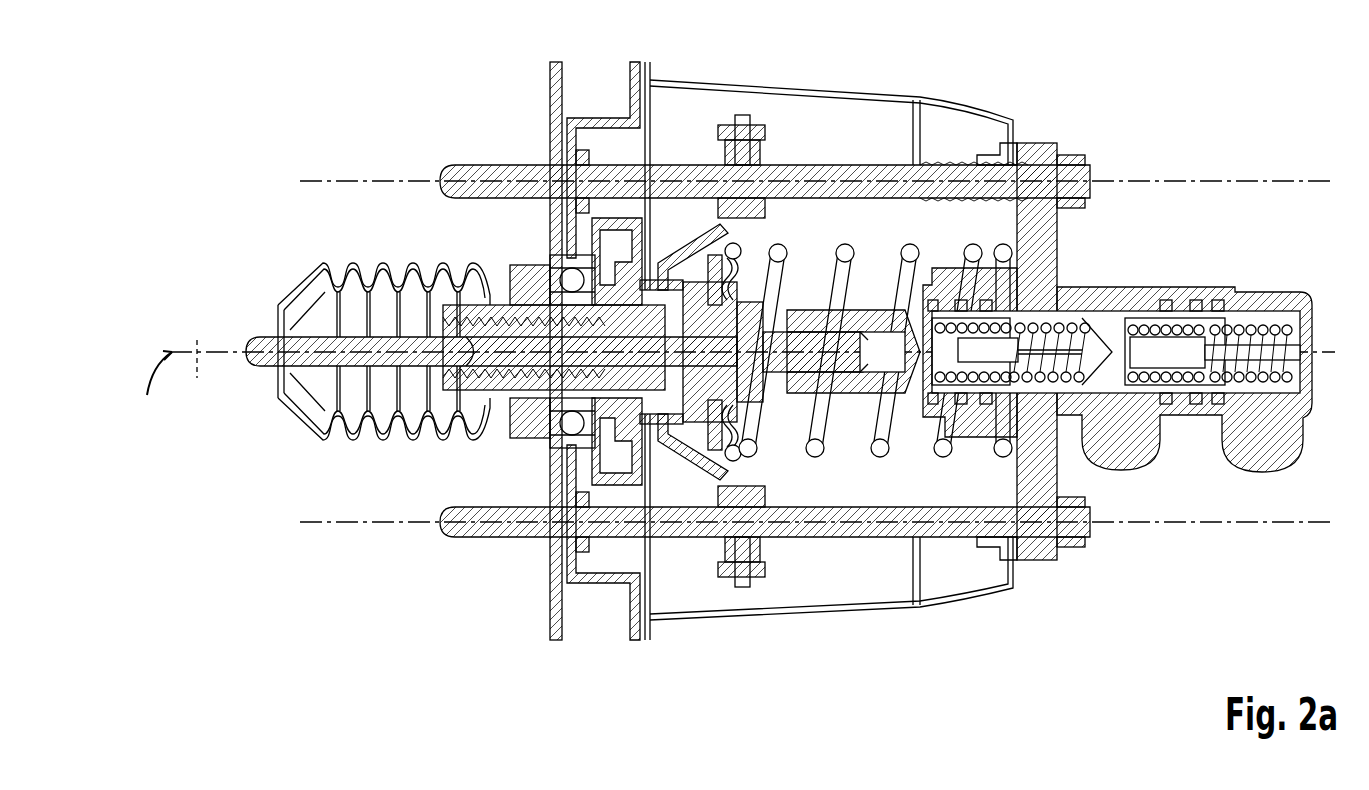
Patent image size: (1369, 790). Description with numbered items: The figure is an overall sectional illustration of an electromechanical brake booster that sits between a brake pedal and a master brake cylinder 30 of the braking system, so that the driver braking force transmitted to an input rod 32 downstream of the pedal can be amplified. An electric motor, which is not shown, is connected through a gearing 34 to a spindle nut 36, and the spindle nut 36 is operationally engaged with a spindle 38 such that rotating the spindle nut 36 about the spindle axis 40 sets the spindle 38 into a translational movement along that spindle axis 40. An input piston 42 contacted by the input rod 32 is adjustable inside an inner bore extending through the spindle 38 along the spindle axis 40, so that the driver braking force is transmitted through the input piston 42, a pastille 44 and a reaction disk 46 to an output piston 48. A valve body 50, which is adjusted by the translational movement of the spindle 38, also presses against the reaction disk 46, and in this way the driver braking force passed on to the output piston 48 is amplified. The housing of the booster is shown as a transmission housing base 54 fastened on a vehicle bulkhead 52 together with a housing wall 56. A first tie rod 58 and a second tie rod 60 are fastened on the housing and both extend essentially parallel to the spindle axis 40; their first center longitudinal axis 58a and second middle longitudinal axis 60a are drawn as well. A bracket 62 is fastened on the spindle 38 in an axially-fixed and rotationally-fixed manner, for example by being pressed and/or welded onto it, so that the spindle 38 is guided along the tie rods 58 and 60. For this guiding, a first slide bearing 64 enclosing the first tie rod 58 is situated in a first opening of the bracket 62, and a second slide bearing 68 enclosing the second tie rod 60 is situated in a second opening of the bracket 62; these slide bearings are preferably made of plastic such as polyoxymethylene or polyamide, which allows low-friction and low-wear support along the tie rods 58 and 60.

The master brake cylinder 30 is at (1178, 288).
The input rod 32 is at (268, 345).
The gearing 34 is at (618, 468).
The spindle nut 36 is at (588, 405).
The spindle 38 is at (542, 392).
The spindle axis 40 is at (198, 372).
The input piston 42 is at (512, 362).
The pastille 44 is at (724, 243).
The reaction disk 46 is at (758, 305).
The output piston 48 is at (855, 342).
The valve body 50 is at (760, 400).
The vehicle bulkhead 52 is at (556, 76).
The transmission housing base 54 is at (603, 584).
The housing wall 56 is at (1013, 565).
The first tie rod 58 is at (862, 172).
The first center longitudinal axis 58a is at (330, 180).
The second tie rod 60 is at (862, 530).
The second middle longitudinal axis 60a is at (1225, 524).
The bracket 62 is at (690, 455).
The first slide bearing 64 is at (757, 150).
The second slide bearing 68 is at (755, 578).